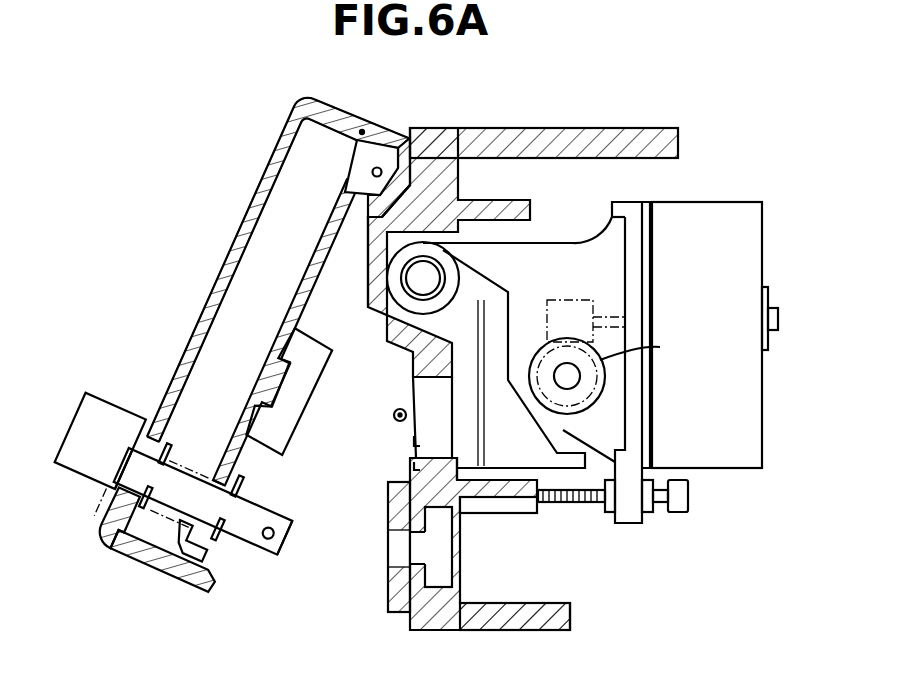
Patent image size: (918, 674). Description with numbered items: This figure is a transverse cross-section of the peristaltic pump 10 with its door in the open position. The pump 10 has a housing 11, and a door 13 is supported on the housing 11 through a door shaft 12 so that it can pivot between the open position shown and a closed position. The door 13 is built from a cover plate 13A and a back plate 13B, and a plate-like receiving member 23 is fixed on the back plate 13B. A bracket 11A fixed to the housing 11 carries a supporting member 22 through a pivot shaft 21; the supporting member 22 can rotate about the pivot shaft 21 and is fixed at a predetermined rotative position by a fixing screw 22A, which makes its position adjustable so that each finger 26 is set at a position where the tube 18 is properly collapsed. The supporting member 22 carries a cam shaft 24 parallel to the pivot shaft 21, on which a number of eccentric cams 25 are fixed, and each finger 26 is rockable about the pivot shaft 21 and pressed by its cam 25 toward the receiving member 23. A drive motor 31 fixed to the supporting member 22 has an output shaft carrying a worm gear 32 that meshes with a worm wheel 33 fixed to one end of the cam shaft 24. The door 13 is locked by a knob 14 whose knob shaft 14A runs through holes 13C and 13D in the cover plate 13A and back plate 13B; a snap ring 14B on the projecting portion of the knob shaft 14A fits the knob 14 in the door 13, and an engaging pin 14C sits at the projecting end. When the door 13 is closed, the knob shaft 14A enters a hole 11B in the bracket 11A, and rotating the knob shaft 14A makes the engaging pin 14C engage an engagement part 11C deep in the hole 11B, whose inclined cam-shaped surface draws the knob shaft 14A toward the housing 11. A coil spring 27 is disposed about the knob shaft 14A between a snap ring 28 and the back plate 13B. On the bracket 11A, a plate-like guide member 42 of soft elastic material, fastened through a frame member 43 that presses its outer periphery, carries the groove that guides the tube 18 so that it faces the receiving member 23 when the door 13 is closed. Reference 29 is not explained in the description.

The peristaltic pump 10 is at (585, 126).
The housing 11 is at (478, 140).
The bracket 11A is at (368, 222).
The hole 11B is at (398, 585).
The engagement part 11C is at (440, 575).
The door shaft 12 is at (390, 140).
The door 13 is at (250, 205).
The cover plate 13A is at (200, 330).
The back plate 13B is at (222, 555).
The hole 13C is at (123, 478).
The hole 13D is at (258, 548).
The knob 14 is at (112, 425).
The knob shaft 14A is at (275, 515).
The snap ring 14B is at (235, 540).
The engaging pin 14C is at (290, 535).
The tube 18 is at (395, 410).
The pivot shaft 21 is at (417, 281).
The supporting member 22 is at (548, 245).
The fixing screw 22A is at (680, 513).
The plate-like receiving member 23 is at (305, 397).
The cam shaft 24 is at (585, 378).
The eccentric cam 25 is at (595, 365).
The finger 26 is at (500, 320).
The coil spring 27 is at (147, 575).
The snap ring 28 is at (118, 557).
The gap 29 is at (103, 506).
The drive motor 31 is at (762, 240).
The worm gear 32 is at (592, 300).
The worm wheel 33 is at (605, 412).
The guide member 42 is at (413, 440).
The frame member 43 is at (415, 467).